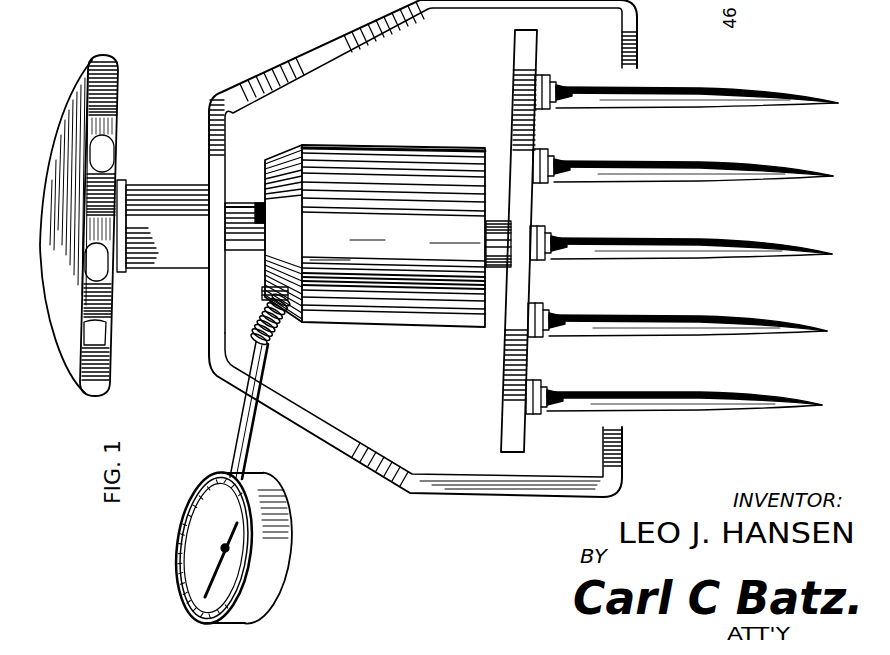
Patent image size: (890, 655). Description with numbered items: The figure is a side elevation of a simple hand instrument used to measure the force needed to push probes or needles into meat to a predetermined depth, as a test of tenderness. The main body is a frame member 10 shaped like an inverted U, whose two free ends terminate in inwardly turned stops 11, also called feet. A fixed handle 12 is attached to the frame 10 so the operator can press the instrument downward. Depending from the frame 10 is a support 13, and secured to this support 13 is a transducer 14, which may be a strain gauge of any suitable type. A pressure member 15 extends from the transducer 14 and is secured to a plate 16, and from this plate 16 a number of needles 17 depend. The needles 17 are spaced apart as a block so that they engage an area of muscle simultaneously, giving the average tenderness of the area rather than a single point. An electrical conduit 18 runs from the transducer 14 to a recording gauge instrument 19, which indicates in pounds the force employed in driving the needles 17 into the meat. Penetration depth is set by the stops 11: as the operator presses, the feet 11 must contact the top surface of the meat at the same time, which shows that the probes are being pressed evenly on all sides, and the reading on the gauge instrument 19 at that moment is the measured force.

The frame member 10 is at (295, 55).
The inwardly turned stops 11 is at (620, 57).
The fixed handle 12 is at (176, 186).
The support 13 is at (246, 203).
The transducer 14 is at (382, 145).
The pressure member 15 is at (491, 225).
The plate 16 is at (513, 128).
The needles 17 is at (655, 252).
The electrical conduit 18 is at (238, 425).
The recording gauge instrument 19 is at (206, 481).